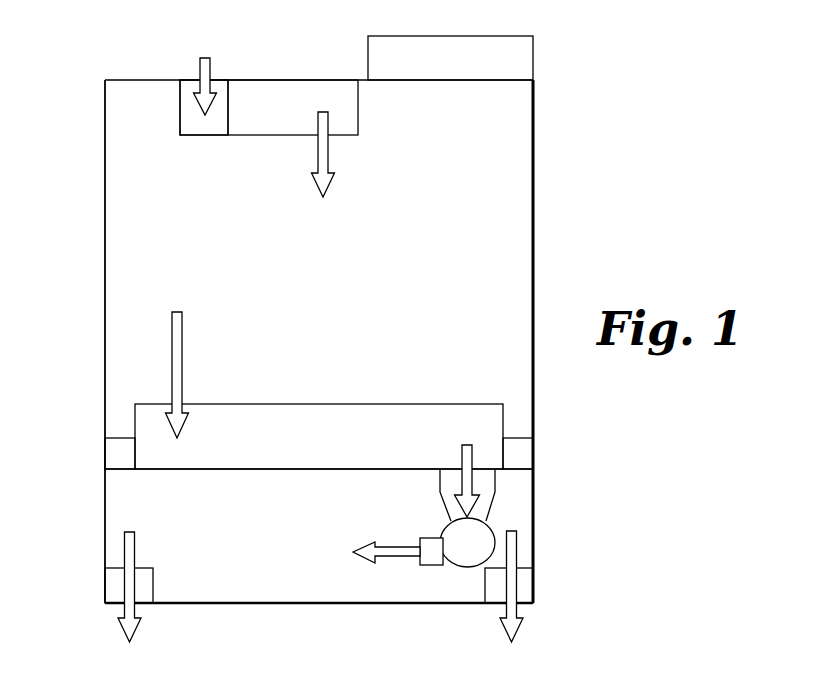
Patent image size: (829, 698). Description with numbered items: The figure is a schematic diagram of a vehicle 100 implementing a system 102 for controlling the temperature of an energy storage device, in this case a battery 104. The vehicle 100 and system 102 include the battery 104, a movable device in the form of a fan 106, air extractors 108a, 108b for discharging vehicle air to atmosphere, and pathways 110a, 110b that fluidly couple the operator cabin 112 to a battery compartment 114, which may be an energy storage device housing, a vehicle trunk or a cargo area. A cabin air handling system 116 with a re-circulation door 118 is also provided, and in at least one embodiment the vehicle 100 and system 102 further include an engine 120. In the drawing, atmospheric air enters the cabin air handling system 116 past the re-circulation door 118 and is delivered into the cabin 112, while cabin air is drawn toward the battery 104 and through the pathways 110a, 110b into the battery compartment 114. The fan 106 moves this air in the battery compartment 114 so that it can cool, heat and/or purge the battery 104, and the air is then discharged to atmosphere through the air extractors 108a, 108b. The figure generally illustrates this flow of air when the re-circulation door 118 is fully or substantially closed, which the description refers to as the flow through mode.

The vehicle 100 is at (592, 86).
The system 102 is at (534, 213).
The battery 104 is at (330, 452).
The fan 106 is at (482, 552).
The air extractor 108a is at (118, 585).
The air extractor 108b is at (522, 582).
The pathway 110a is at (120, 453).
The pathway 110b is at (520, 453).
The operator cabin 112 is at (330, 290).
The battery compartment 114 is at (267, 544).
The cabin air handling system 116 is at (288, 118).
The re-circulation door 118 is at (187, 111).
The engine 120 is at (465, 70).